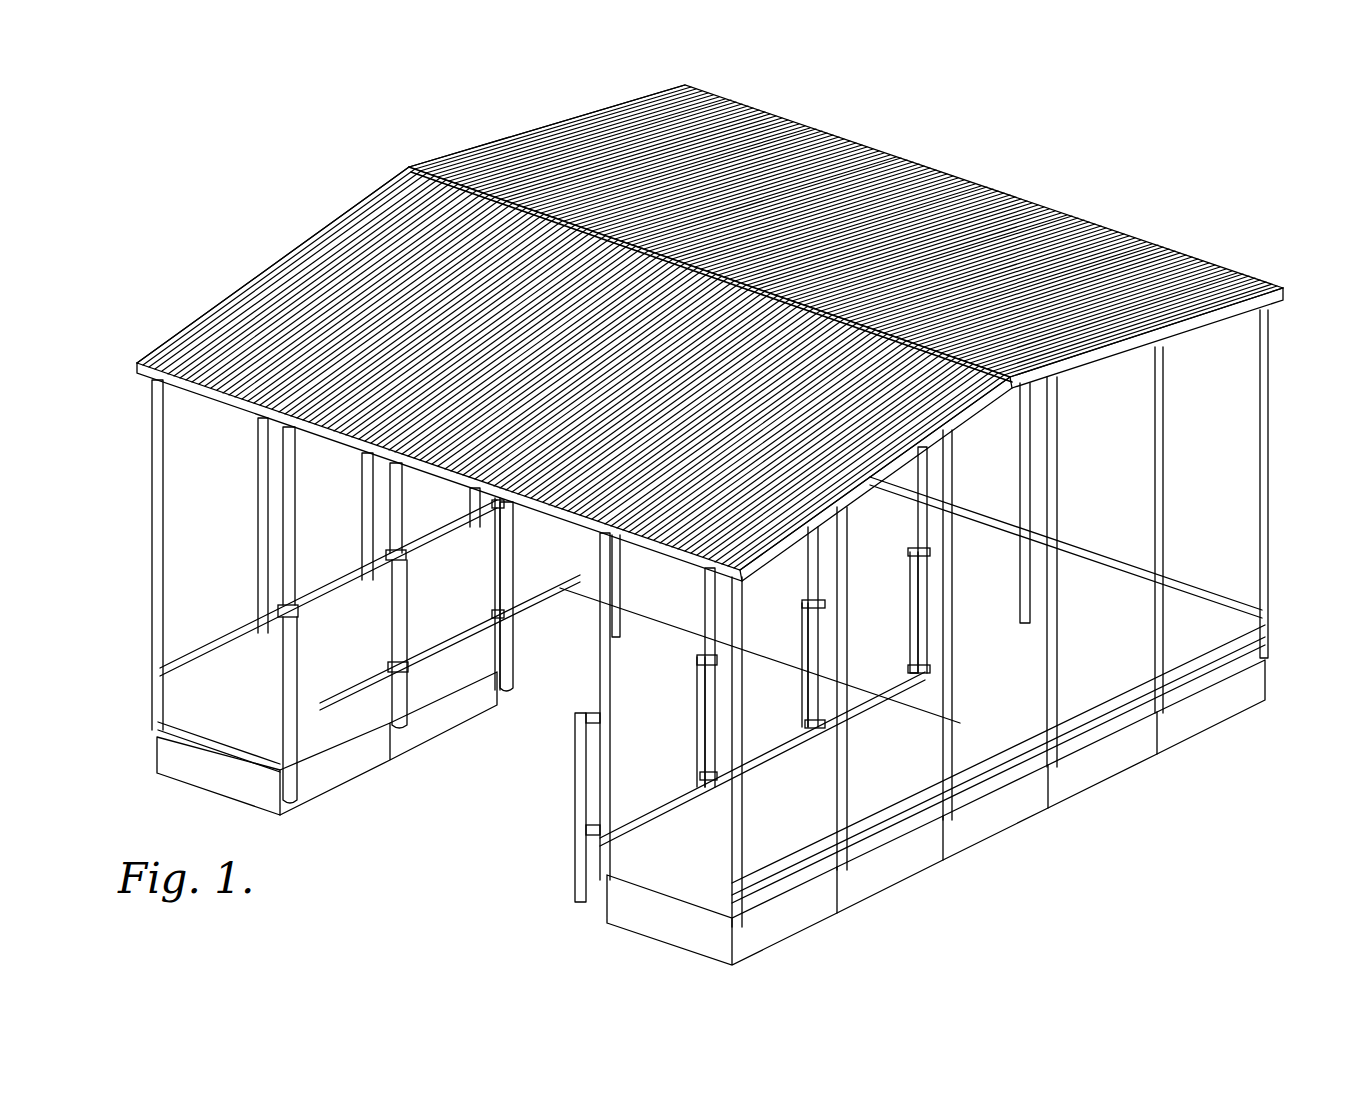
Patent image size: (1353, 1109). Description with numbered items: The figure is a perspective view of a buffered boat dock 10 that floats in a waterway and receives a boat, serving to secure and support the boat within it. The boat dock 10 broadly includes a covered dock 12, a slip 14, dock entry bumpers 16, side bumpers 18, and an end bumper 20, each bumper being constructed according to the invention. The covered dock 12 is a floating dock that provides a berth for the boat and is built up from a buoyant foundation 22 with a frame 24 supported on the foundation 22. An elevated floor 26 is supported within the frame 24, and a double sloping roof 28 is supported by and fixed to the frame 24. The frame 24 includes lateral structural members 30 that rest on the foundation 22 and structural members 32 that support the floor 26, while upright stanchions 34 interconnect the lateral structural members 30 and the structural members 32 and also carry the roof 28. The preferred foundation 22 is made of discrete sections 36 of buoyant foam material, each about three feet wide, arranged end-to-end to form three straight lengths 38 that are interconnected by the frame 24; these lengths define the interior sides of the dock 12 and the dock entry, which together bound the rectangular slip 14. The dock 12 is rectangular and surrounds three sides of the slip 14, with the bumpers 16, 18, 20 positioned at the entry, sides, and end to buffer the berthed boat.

The buffered boat dock 10 is at (1110, 192).
The covered dock 12 is at (915, 180).
The slip 14 is at (492, 818).
The dock entry bumpers 16 is at (573, 893).
The side bumpers 18 is at (403, 733).
The end bumper 20 is at (853, 562).
The buoyant foundation 22 is at (1002, 820).
The frame 24 is at (912, 828).
The elevated floor 26 is at (1173, 593).
The double sloping roof 28 is at (330, 262).
The lateral structural members 30 is at (1110, 730).
The structural members 32 is at (1228, 640).
The upright stanchions 34 is at (837, 778).
The discrete sections 36 is at (778, 928).
The straight lengths 38 is at (327, 778).